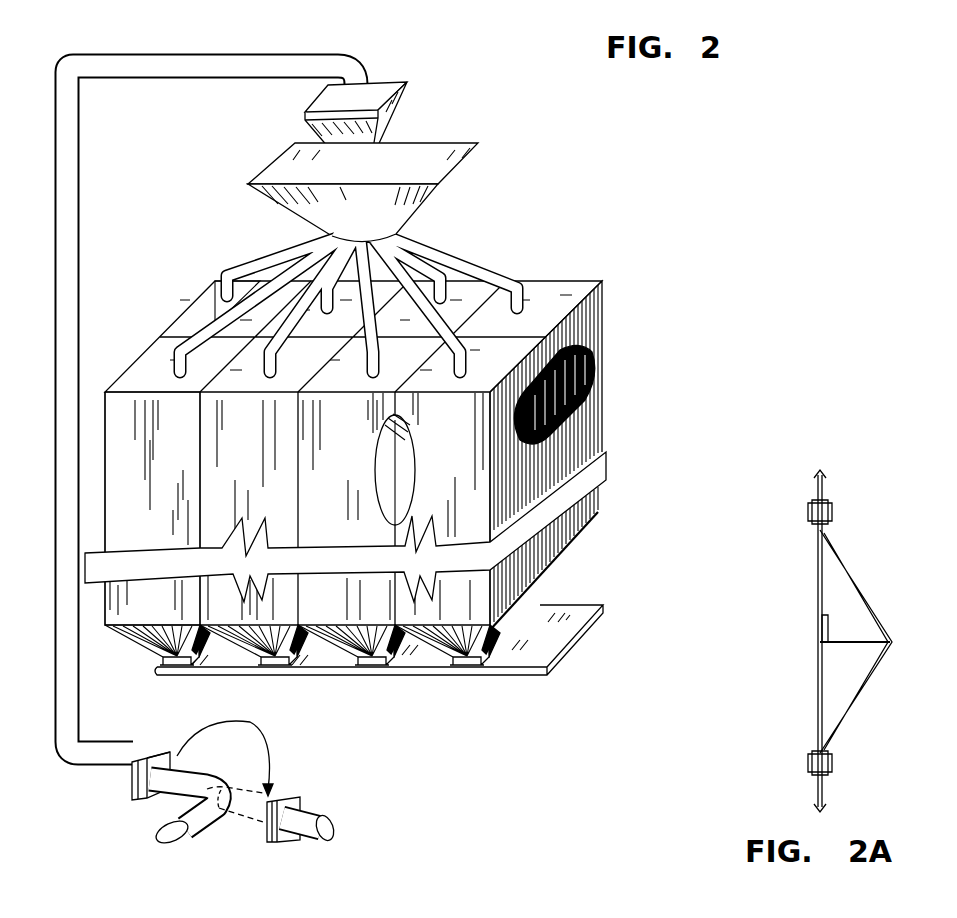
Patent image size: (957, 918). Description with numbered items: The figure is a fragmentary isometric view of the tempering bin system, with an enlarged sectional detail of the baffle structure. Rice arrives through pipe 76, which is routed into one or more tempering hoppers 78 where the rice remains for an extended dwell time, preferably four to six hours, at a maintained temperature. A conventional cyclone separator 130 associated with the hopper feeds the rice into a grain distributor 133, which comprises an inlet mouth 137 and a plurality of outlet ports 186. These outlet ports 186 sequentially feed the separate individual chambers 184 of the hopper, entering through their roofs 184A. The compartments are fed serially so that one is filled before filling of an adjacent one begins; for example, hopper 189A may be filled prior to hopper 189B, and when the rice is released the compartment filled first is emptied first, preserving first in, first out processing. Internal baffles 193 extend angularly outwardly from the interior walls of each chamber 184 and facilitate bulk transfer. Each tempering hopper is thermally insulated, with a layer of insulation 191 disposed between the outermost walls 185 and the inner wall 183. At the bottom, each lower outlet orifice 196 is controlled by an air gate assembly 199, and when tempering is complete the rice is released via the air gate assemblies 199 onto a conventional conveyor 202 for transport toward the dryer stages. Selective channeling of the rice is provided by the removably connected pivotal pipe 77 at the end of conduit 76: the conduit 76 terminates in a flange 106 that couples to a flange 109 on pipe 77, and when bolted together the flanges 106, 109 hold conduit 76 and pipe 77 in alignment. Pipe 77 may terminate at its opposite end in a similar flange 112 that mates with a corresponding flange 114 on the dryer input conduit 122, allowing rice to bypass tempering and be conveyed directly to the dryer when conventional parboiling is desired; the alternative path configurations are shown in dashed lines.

In FIG. 2, the pipe 76 is at (79, 210).
In FIG. 2, the cyclone separator 130 is at (410, 86).
In FIG. 2, the inlet mouth 137 is at (321, 176).
In FIG. 2, the grain distributor 133 is at (478, 143).
In FIG. 2, the tempering hopper 78 is at (387, 394).
In FIG. 2, the outlet ports 186 is at (267, 275).
In FIG. 2, the roofs 184A is at (218, 292).
In FIG. 2, the chambers 184 is at (555, 308).
In FIG. 2, the outermost walls 185 is at (587, 318).
In FIG. 2, the inner wall 183 is at (615, 393).
In FIG. 2, the layer of insulation 191 is at (573, 412).
In FIG. 2, the hopper 189B is at (155, 387).
In FIG. 2, the internal baffles 193 is at (386, 480).
In FIG. 2A, the internal baffles 193 is at (858, 585).
In FIG. 2, the hopper 189A is at (247, 468).
In FIG. 2, the air gate assembly 199 is at (545, 592).
In FIG. 2, the conveyor 202 is at (580, 645).
In FIG. 2, the lower outlet orifice 196 is at (468, 650).
In FIG. 2, the flange 106 is at (150, 755).
In FIG. 2, the flange 109 is at (158, 797).
In FIG. 2, the pivotal pipe 77 is at (207, 817).
In FIG. 2, the flange 112 is at (269, 785).
In FIG. 2, the flange 114 is at (300, 800).
In FIG. 2, the dryer input conduit 122 is at (318, 820).